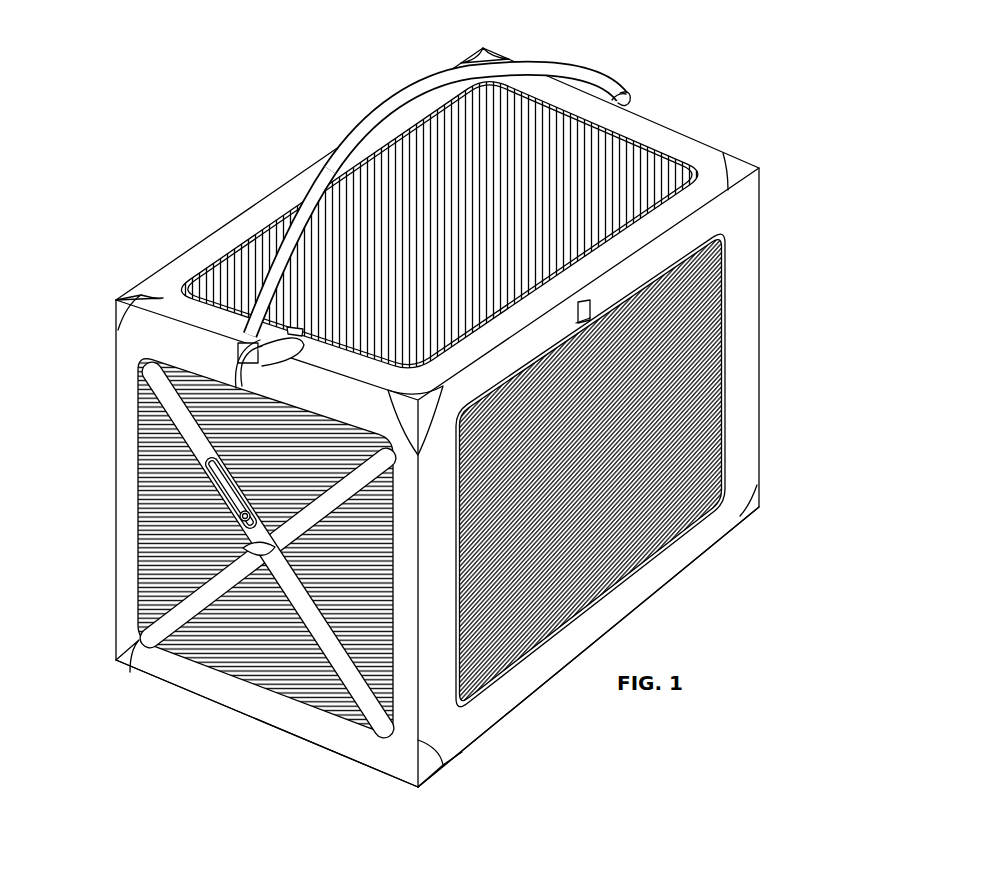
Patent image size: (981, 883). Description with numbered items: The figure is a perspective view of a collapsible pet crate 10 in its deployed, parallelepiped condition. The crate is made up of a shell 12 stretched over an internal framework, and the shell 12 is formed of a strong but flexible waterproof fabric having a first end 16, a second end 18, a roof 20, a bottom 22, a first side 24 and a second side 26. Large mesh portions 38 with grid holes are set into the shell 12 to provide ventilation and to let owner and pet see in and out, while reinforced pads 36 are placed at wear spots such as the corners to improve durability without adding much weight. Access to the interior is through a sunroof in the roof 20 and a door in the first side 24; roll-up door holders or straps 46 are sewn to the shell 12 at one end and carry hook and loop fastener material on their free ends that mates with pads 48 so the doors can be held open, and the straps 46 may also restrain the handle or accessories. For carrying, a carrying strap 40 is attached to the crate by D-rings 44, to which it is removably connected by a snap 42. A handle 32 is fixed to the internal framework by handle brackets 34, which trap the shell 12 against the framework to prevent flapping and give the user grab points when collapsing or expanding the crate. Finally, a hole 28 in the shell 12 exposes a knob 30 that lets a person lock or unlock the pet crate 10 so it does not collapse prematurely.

The pet crate 10 is at (300, 98).
The shell 12 is at (312, 178).
The first end 16 is at (128, 456).
The second end 18 is at (705, 132).
The roof 20 is at (162, 297).
The bottom 22 is at (472, 748).
The first side 24 is at (747, 432).
The second side 26 is at (360, 123).
The hole 28 is at (207, 474).
The knob 30 is at (238, 514).
The handle 32 is at (255, 557).
The handle brackets 34 is at (247, 561).
The reinforced pads 36 is at (116, 355).
The mesh portions 38 is at (243, 267).
The carrying strap 40 is at (298, 257).
The snap 42 is at (252, 345).
The D-ring 44 is at (257, 352).
The straps 46 is at (266, 376).
The pads 48 is at (264, 359).